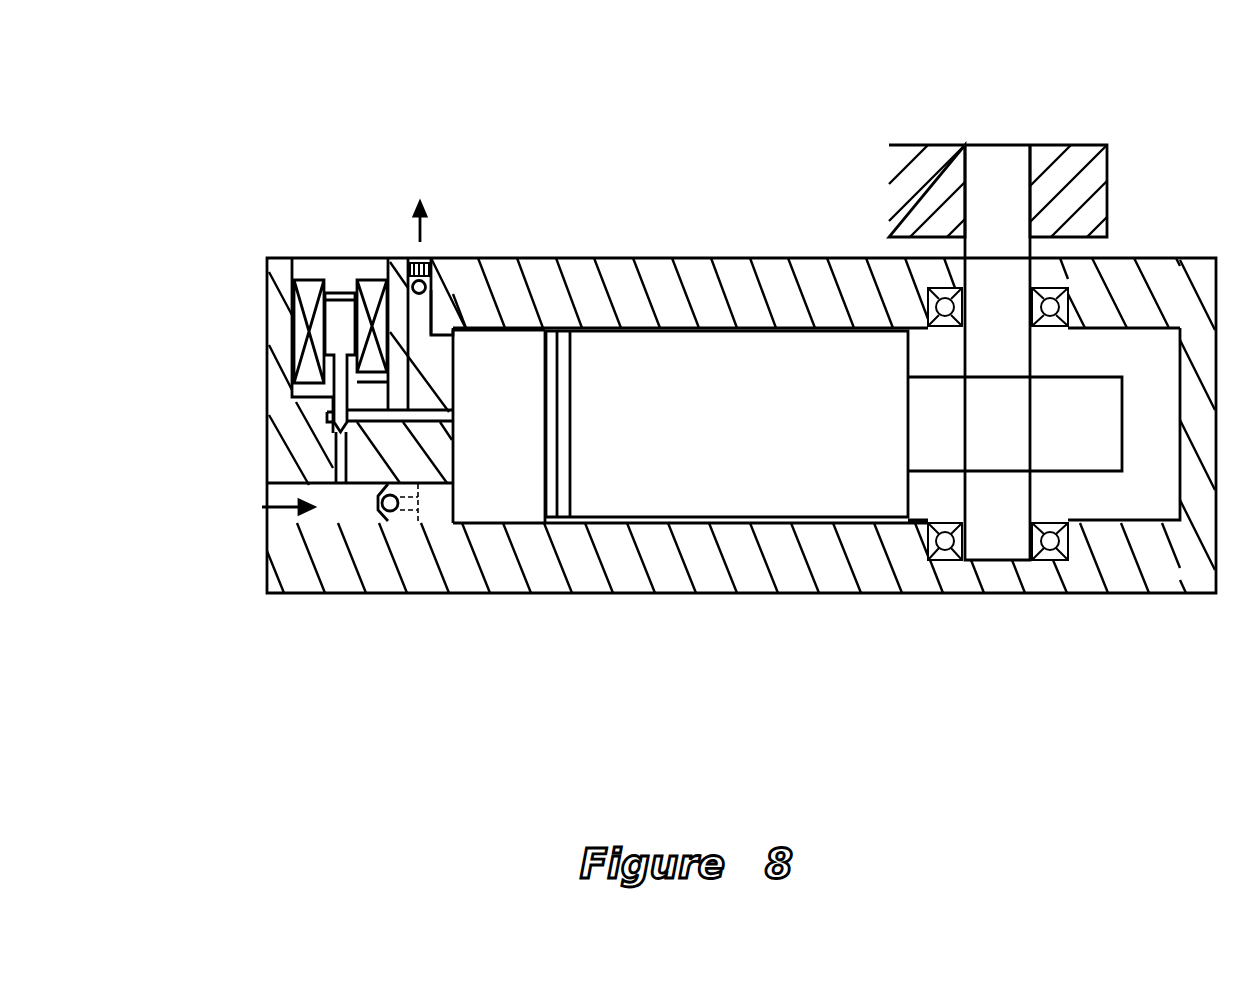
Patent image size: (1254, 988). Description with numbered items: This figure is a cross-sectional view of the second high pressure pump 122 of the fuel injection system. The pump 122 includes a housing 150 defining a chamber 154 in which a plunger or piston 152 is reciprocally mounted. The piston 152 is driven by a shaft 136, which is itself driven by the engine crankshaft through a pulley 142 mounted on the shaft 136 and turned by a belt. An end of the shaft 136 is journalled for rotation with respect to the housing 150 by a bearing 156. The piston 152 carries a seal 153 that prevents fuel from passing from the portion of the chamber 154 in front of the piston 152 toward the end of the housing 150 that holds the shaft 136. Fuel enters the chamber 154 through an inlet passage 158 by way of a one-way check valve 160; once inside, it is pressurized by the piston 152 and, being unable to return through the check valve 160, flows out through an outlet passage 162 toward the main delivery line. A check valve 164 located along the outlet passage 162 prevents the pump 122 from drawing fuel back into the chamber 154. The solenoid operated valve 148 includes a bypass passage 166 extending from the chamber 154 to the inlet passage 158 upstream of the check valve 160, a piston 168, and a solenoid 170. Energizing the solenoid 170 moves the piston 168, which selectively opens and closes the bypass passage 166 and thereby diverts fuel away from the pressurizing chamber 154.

The second high pressure pump 122 is at (1081, 121).
The shaft 136 is at (996, 144).
The pulley 142 is at (1102, 198).
The solenoid operated valve 148 is at (334, 272).
The housing 150 is at (712, 572).
The plunger or piston 152 is at (727, 424).
The seal 153 is at (565, 422).
The chamber 154 is at (498, 502).
The bearing 156 is at (937, 562).
The inlet passage 158 is at (354, 507).
The one-way check valve 160 is at (393, 514).
The outlet passage 162 is at (423, 318).
The check valve 164 is at (423, 258).
The bypass passage 166 is at (339, 467).
The piston 168 is at (291, 390).
The solenoid 170 is at (376, 286).